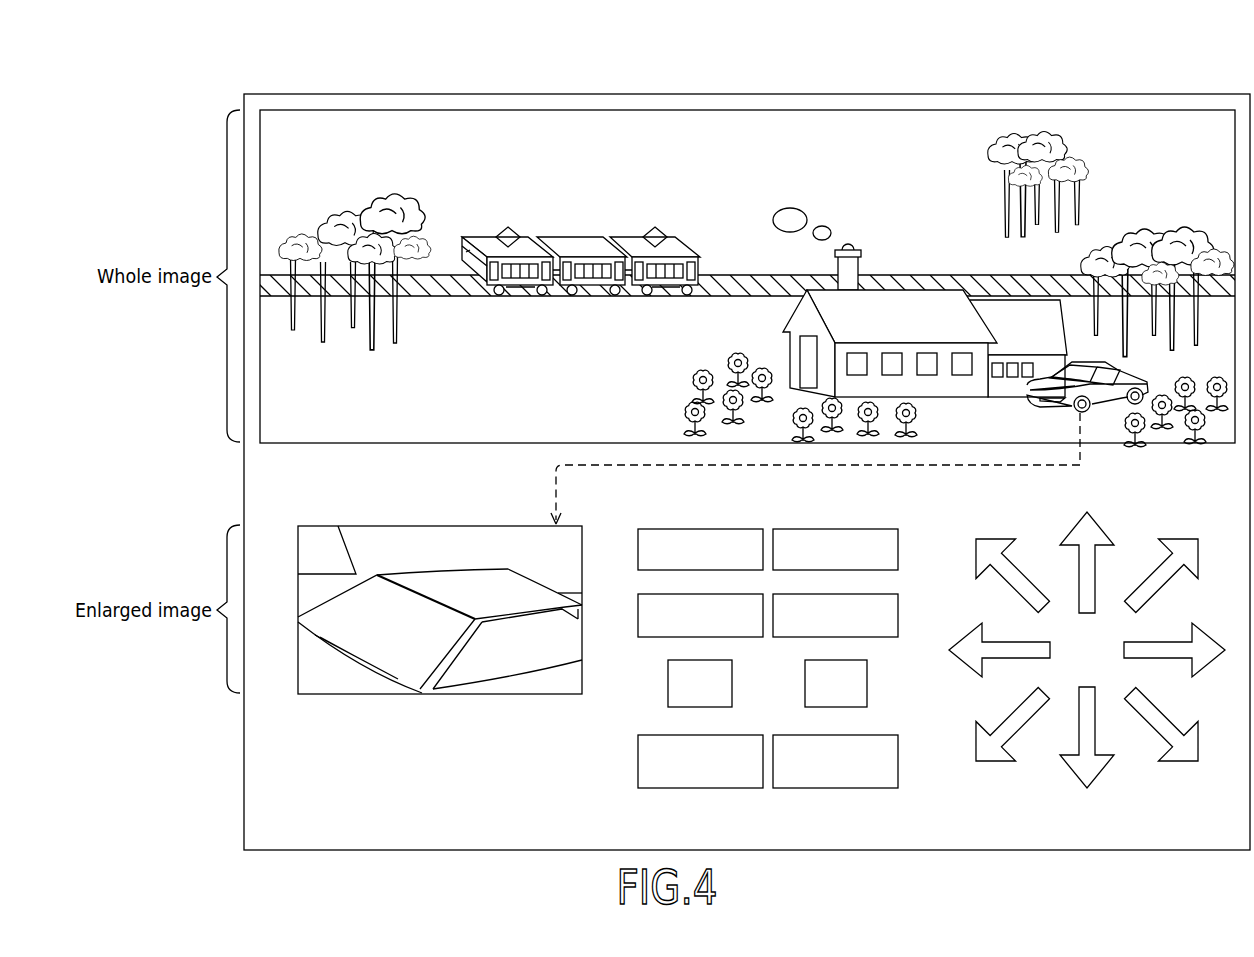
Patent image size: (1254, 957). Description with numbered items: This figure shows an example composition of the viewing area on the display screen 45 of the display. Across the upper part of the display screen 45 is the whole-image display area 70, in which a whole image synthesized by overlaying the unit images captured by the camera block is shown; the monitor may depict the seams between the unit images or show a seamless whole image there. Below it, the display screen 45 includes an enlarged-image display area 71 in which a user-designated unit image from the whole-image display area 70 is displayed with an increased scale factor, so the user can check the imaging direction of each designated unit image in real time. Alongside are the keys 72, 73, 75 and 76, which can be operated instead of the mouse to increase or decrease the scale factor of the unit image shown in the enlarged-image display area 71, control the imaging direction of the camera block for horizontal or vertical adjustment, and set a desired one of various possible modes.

The display screen 45 is at (757, 91).
The whole-image display area 70 is at (467, 444).
The enlarged-image display area 71 is at (457, 695).
The key 72 is at (678, 790).
The key 73 is at (826, 790).
The keys 75 is at (955, 798).
The keys 76 is at (638, 521).